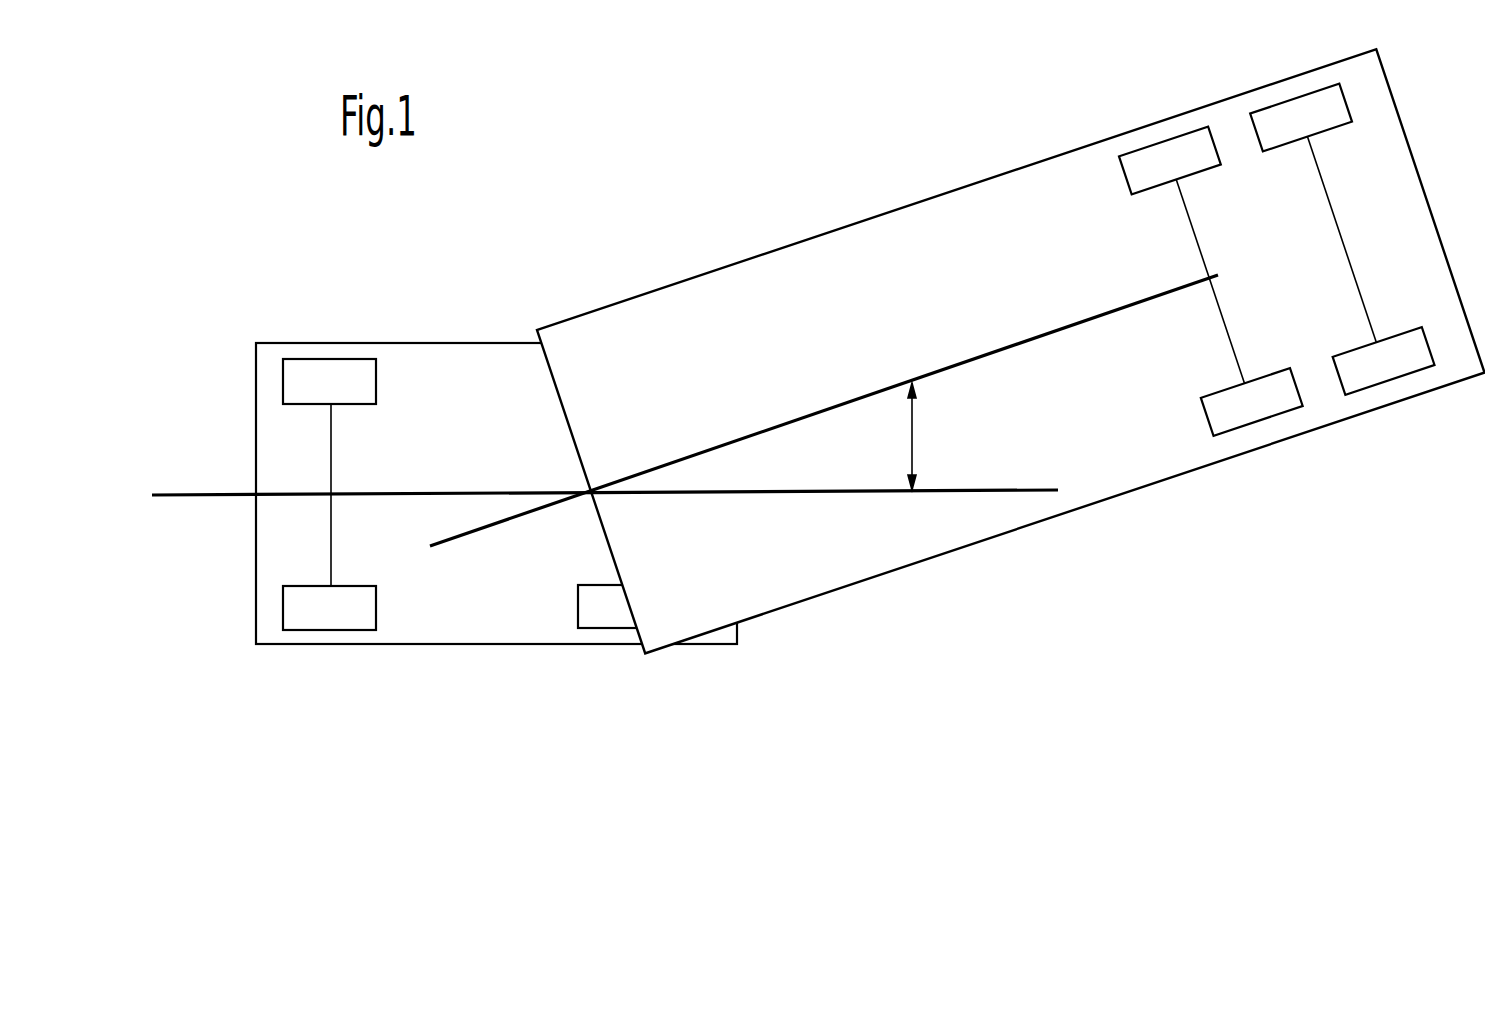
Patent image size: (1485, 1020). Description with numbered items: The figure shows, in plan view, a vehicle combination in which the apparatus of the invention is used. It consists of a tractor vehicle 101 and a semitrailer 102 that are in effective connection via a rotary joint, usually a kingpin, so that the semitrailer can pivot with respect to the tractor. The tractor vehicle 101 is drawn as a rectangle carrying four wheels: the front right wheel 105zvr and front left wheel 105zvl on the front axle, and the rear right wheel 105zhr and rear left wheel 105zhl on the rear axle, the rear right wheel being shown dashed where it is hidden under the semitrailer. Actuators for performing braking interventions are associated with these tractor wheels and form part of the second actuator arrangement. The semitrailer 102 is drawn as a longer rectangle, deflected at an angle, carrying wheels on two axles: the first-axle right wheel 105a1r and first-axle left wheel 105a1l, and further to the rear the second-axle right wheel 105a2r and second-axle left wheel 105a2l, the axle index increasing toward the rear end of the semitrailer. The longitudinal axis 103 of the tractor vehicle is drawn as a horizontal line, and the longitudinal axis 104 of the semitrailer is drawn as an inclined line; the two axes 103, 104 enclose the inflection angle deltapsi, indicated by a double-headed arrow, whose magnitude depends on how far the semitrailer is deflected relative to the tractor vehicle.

The tractor vehicle 101 is at (450, 343).
The semitrailer 102 is at (1154, 462).
The longitudinal axis of the tractor vehicle 103 is at (420, 492).
The longitudinal axis of the semitrailer 104 is at (1003, 350).
The front right wheel of the tractor vehicle 105zvr is at (329, 472).
The front left wheel of the tractor vehicle 105zvl is at (329, 608).
The rear right wheel of the tractor vehicle 105zhr is at (628, 380).
The rear left wheel of the tractor vehicle 105zhl is at (605, 620).
The first-axle right wheel of the semitrailer 105a1r is at (1204, 263).
The second-axle right wheel of the semitrailer 105a2r is at (1335, 221).
The first-axle left wheel of the semitrailer 105a1l is at (1252, 402).
The second-axle left wheel of the semitrailer 105a2l is at (1384, 361).